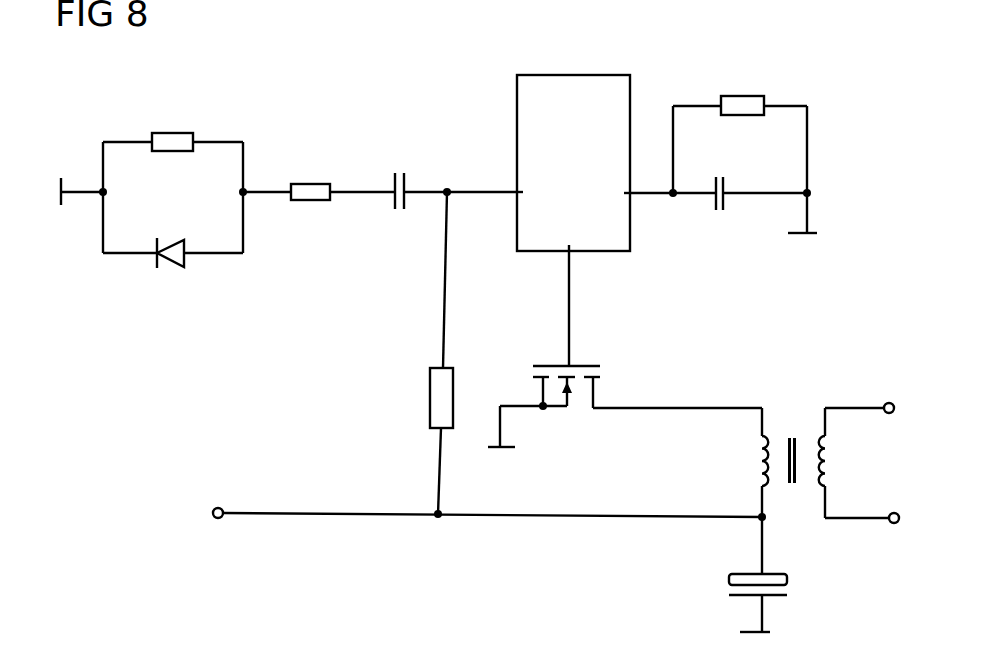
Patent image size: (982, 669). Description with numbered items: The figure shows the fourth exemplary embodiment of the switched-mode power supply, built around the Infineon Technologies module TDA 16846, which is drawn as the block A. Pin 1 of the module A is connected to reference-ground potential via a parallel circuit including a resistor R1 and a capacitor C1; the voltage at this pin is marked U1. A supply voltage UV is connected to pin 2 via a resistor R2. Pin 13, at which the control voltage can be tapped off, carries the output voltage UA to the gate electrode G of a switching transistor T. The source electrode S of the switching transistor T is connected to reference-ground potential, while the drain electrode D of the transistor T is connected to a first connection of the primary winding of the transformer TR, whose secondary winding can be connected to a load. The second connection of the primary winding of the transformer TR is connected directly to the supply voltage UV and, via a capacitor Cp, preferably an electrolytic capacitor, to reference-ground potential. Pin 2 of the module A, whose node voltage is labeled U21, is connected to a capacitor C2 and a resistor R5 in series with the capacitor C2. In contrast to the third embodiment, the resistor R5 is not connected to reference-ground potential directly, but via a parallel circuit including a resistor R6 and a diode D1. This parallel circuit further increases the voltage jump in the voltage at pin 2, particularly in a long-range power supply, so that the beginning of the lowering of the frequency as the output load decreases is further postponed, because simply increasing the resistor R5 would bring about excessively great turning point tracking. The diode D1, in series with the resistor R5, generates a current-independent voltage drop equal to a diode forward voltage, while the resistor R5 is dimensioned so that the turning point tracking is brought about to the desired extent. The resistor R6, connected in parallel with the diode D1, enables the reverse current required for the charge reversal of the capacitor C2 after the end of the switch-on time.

The resistor R6 is at (173, 125).
The diode D1 is at (173, 274).
The resistor R5 is at (319, 175).
The capacitor C2 is at (402, 173).
The voltage U21 at pin 2 input U21 is at (460, 168).
The integrated circuit TDA 16846 A is at (573, 144).
The pin 2 is at (527, 192).
The pin 1 is at (620, 192).
The pin 13 is at (573, 237).
The voltage U1 at pin 1 U1 is at (653, 211).
The capacitor C1 is at (740, 212).
The resistor R1 is at (740, 126).
The output voltage UA (gate drive) UA is at (592, 308).
The resistor R2 is at (421, 353).
The switching transistor T is at (625, 387).
The gate electrode G is at (566, 343).
The source electrode S is at (527, 413).
The drain electrode D is at (677, 415).
The supply voltage UV is at (483, 497).
The transformer TR is at (830, 441).
The capacitor Cp is at (780, 574).